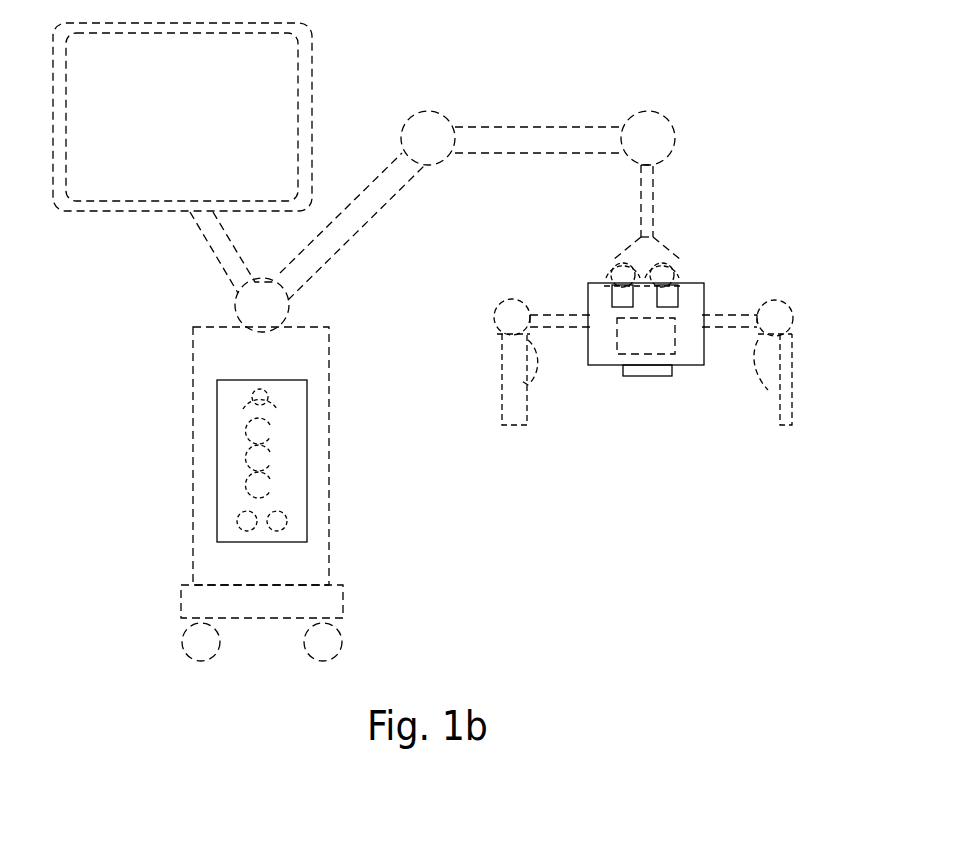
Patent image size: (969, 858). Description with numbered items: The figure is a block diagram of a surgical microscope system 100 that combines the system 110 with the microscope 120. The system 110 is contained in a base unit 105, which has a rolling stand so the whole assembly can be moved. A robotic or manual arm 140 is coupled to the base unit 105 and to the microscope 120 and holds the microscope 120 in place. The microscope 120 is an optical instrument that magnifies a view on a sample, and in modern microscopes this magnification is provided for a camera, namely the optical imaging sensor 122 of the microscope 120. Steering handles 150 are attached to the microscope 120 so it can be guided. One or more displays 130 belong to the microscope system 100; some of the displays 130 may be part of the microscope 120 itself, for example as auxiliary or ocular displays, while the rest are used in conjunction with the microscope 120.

The microscope system 100 is at (774, 575).
The base unit 105 is at (330, 550).
The system 110 is at (216, 488).
The microscope 120 is at (677, 367).
The optical imaging sensor 122 is at (612, 297).
The displays 130 is at (312, 103).
The arm 140 is at (368, 218).
The steering handles 150 is at (795, 347).